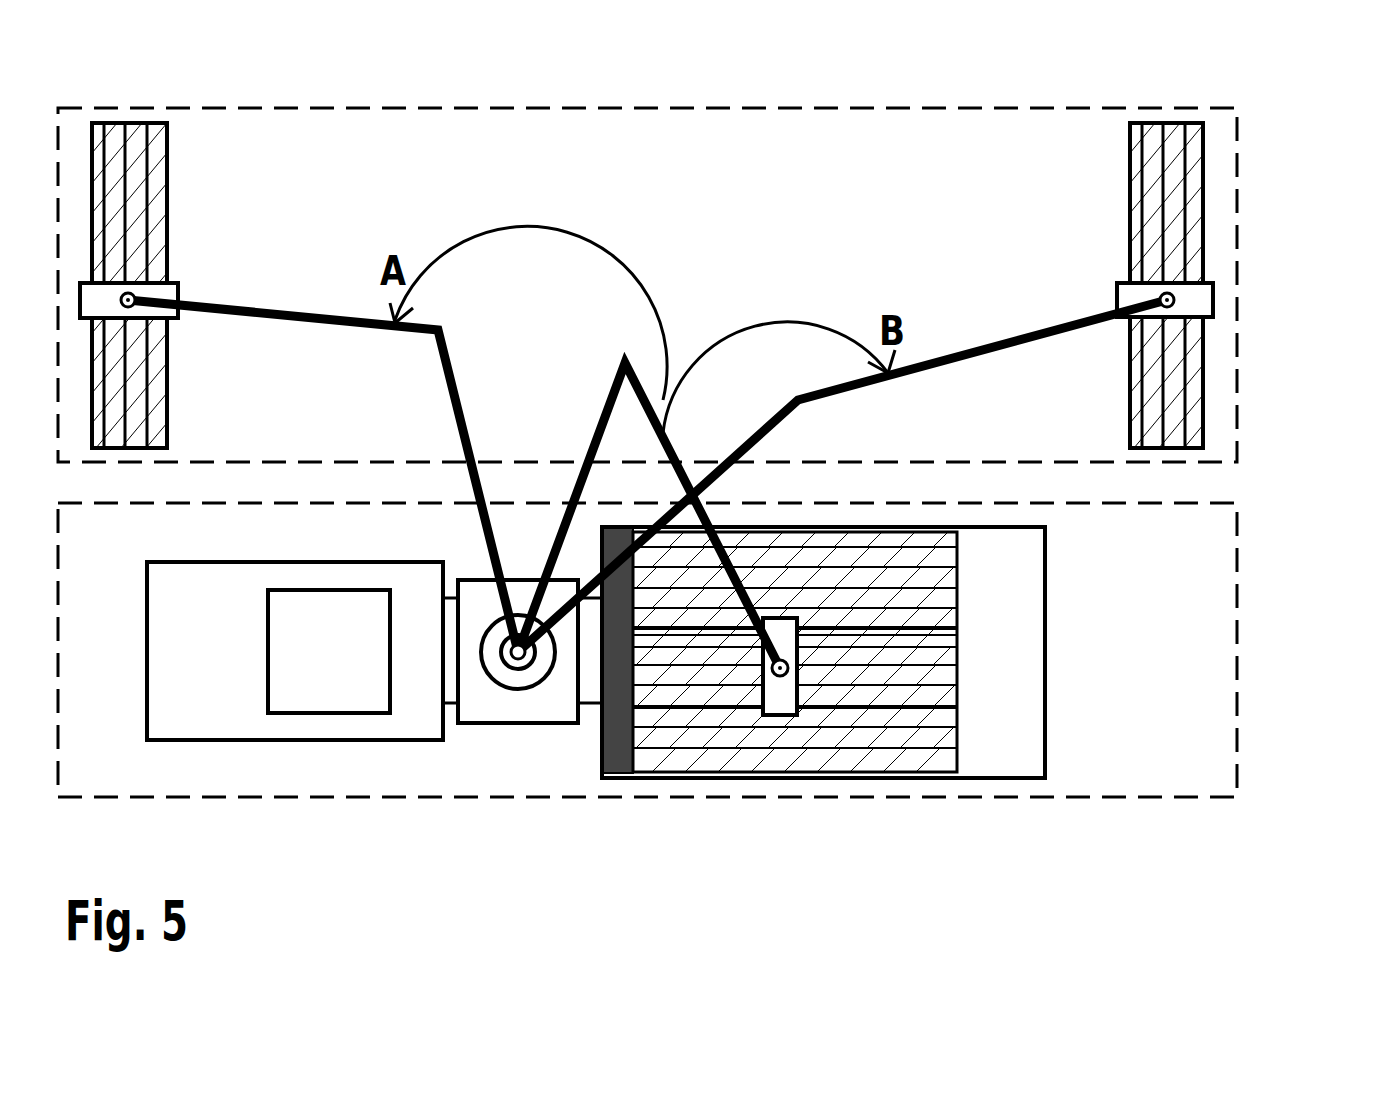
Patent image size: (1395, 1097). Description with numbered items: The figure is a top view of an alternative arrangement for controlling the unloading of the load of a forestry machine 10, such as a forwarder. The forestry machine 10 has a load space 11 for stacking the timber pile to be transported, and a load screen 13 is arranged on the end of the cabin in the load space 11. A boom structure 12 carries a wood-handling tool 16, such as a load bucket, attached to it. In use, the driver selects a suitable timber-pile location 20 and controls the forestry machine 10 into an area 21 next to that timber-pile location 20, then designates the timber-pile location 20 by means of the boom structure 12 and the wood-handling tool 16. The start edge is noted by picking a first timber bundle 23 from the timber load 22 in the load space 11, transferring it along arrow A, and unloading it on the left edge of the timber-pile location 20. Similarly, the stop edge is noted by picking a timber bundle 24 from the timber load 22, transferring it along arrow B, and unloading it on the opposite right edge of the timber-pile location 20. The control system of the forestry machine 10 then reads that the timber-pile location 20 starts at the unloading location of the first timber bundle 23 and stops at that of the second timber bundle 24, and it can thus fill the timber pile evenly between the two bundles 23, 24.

The forestry machine 10 is at (485, 727).
The load space 11 is at (1047, 740).
The boom structure 12 is at (460, 393).
The load screen 13 is at (623, 723).
The wood-handling tool 16 is at (178, 283).
The timber-pile location 20 is at (1238, 160).
The area 21 is at (1238, 543).
The timber load 22 is at (958, 595).
The first timber bundle 23 is at (167, 190).
The timber bundle 24 is at (1205, 398).